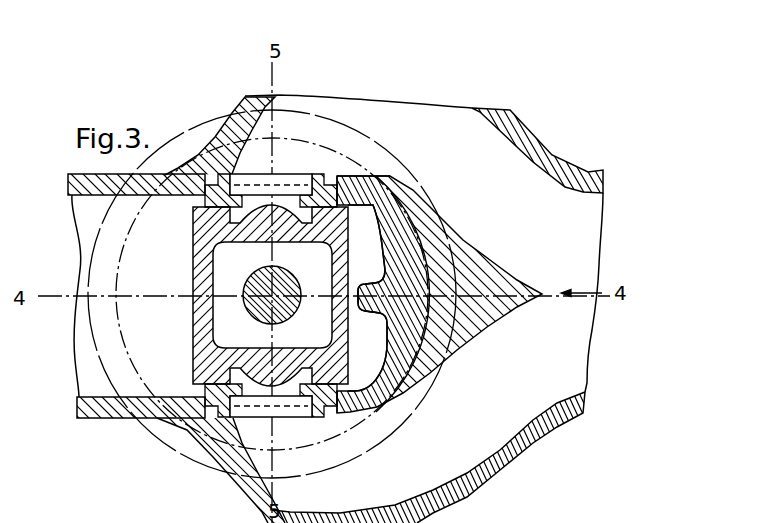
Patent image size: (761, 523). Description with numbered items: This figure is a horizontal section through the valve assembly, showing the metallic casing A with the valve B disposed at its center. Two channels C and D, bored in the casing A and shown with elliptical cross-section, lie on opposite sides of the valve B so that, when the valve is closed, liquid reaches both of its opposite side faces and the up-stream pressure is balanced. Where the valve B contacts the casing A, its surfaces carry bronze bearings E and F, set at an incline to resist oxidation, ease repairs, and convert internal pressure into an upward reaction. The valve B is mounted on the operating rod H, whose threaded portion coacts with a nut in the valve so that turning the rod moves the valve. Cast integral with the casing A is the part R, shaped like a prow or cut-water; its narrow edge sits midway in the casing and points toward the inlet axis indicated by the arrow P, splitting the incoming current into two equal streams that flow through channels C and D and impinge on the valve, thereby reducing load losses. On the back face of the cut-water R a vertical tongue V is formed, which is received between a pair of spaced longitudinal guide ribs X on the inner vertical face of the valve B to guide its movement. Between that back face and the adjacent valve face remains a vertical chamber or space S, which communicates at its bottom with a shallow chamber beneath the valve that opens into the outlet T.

The metallic casing A is at (242, 107).
The valve B is at (193, 246).
The channel C is at (272, 287).
The channel D is at (272, 294).
The bronze bearing E is at (326, 176).
The bronze bearing F is at (333, 198).
The operating rod H is at (262, 305).
The arrow indicating inlet axis P is at (581, 282).
The cut-water part R is at (453, 237).
The vertical chamber or space S is at (367, 298).
The outlet T is at (275, 261).
The vertical tongue V is at (358, 291).
The guide ribs X is at (368, 272).